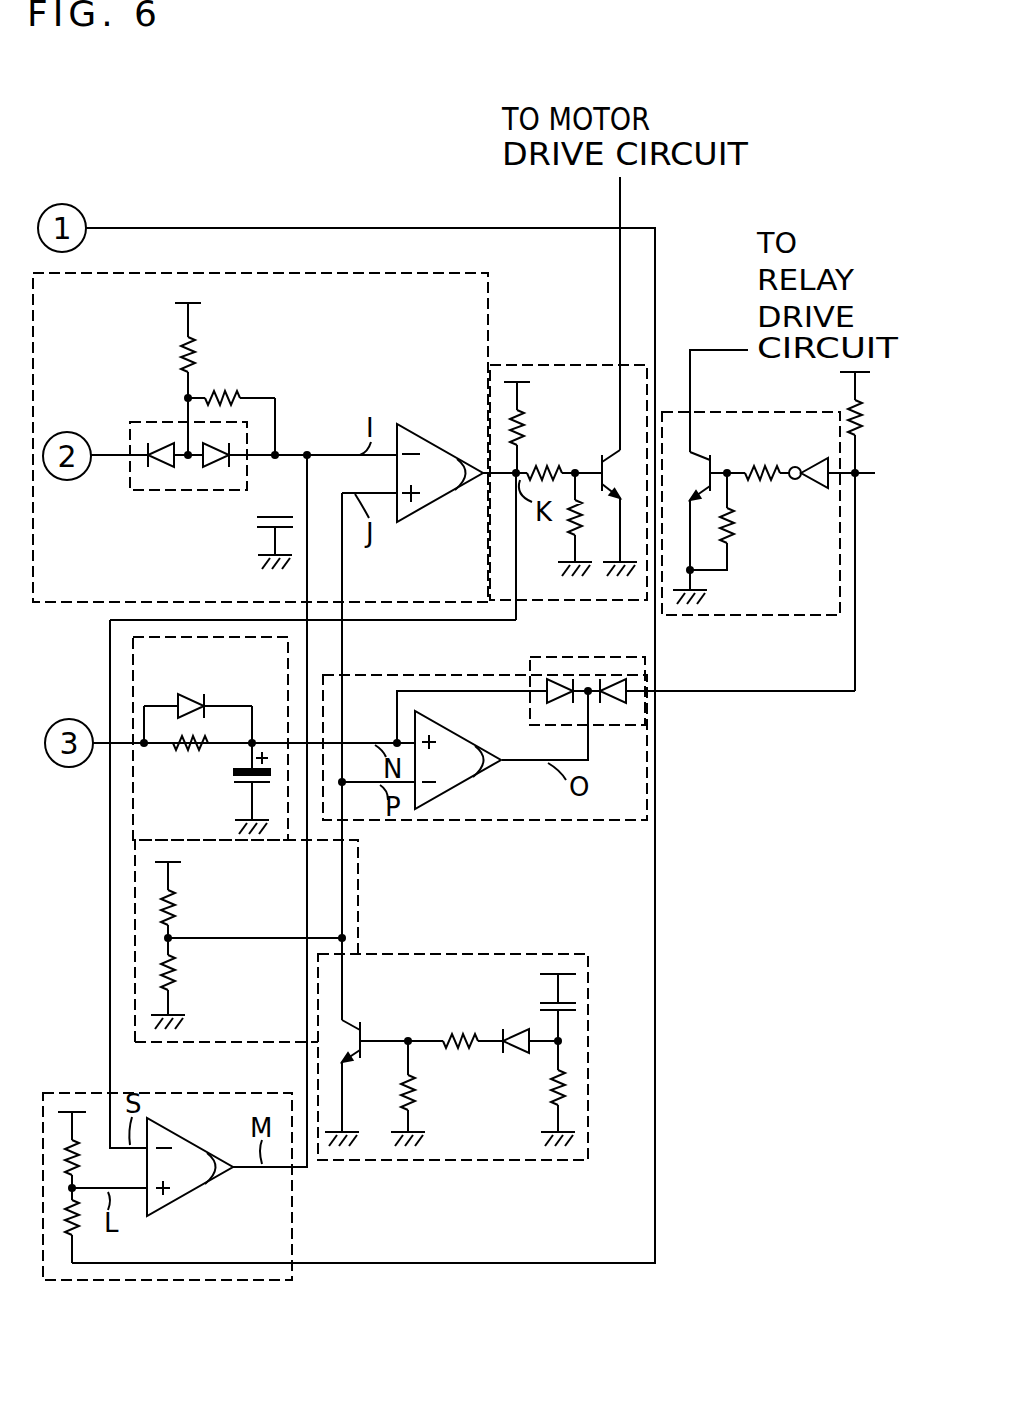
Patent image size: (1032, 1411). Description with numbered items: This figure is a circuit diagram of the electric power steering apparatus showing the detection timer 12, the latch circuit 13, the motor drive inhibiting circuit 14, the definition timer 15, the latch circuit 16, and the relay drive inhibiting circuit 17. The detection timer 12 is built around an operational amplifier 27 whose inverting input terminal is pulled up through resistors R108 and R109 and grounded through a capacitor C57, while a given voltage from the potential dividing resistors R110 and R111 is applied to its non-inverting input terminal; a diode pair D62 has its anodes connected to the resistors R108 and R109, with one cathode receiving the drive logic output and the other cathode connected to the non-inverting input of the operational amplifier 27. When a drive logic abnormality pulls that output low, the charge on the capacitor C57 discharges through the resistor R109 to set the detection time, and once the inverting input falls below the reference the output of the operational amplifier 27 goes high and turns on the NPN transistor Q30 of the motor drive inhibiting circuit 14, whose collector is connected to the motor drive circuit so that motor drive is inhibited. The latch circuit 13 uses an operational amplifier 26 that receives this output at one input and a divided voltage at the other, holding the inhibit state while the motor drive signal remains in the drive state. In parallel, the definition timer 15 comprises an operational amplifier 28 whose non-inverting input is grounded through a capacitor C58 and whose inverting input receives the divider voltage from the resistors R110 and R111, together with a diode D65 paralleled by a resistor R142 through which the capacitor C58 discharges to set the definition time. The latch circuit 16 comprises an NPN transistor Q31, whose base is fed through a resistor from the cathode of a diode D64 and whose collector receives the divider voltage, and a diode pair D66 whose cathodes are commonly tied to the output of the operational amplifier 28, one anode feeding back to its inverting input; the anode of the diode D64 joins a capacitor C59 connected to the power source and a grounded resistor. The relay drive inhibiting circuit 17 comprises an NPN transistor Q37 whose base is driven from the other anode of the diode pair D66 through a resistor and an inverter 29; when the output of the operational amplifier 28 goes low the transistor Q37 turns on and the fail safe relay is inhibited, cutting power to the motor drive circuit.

The detection timer 12 is at (490, 290).
The latch circuit 13 is at (293, 1238).
The motor drive inhibiting circuit 14 is at (556, 365).
The definition timer 15 is at (133, 672).
The latch circuit 16 is at (648, 716).
The relay drive inhibiting circuit 17 is at (762, 617).
The operational amplifier 26 is at (190, 1196).
The operational amplifier 27 is at (410, 517).
The operational amplifier 28 is at (460, 790).
The inverter 29 is at (812, 488).
The resistor R108 is at (197, 350).
The resistor R109 is at (216, 394).
The potential dividing resistor R110 is at (178, 900).
The potential dividing resistor R111 is at (178, 975).
The resistor R142 is at (188, 748).
The diode pair D62 is at (145, 492).
The diode D64 is at (512, 1055).
The diode D65 is at (197, 692).
The diode pair D66 is at (569, 657).
The capacitor C57 is at (257, 522).
The capacitor C58 is at (238, 790).
The capacitor C59 is at (543, 997).
The NPN transistor Q30 is at (600, 463).
The NPN transistor Q31 is at (363, 1026).
The NPN transistor Q37 is at (714, 462).